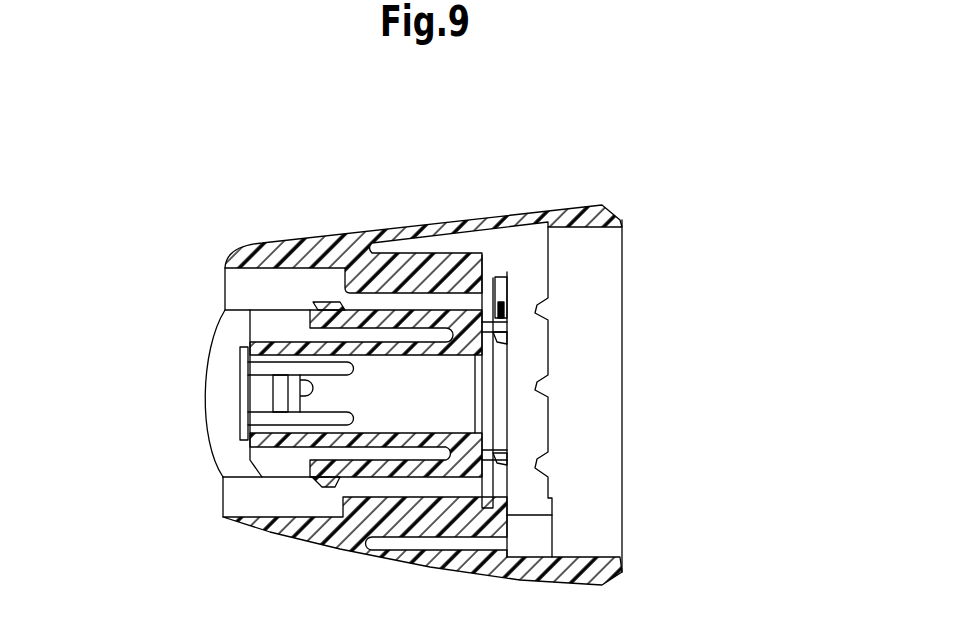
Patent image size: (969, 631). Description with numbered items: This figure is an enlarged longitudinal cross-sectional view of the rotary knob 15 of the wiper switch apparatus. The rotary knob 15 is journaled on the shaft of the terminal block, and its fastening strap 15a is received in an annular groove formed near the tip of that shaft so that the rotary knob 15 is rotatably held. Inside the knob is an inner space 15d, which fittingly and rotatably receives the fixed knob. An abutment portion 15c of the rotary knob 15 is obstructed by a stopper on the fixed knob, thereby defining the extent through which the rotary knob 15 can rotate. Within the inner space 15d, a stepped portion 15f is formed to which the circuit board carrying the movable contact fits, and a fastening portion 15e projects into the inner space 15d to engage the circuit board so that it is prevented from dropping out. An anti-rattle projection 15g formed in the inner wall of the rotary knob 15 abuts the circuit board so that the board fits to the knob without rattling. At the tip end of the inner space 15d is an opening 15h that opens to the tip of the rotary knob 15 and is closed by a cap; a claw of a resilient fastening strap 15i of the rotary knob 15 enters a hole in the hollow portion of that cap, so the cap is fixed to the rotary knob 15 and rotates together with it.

The rotary knob 15 is at (446, 214).
The fastening strap 15a is at (243, 367).
The abutment portion 15c is at (548, 232).
The inner space 15d is at (576, 374).
The fastening portion 15e is at (507, 302).
The stepped portion 15f is at (507, 323).
The anti-rattle projection 15g is at (498, 342).
The opening 15h is at (250, 292).
The resilient fastening strap 15i is at (328, 468).